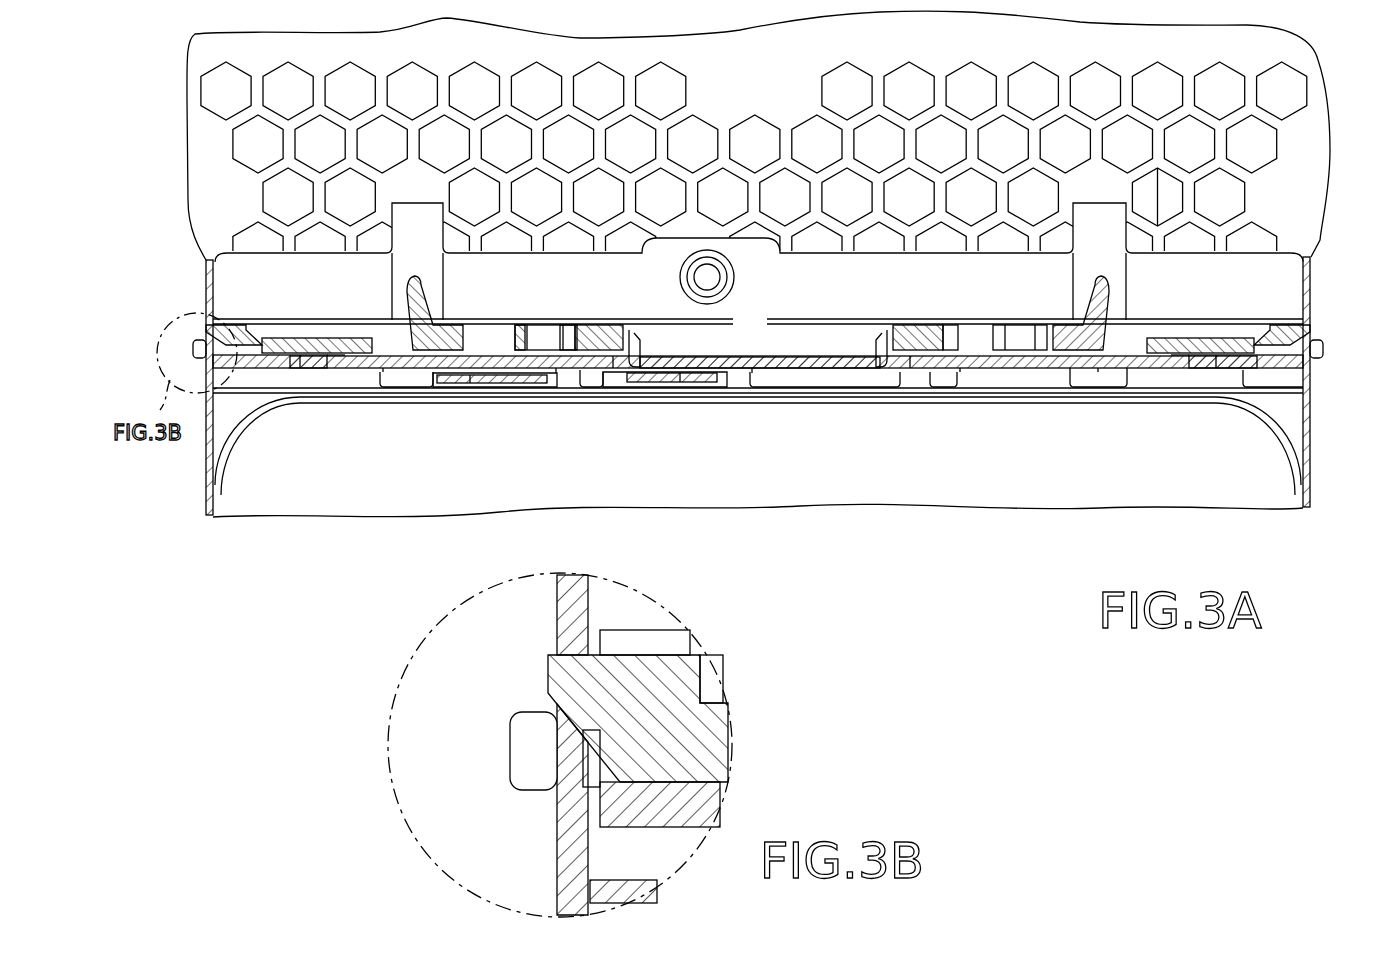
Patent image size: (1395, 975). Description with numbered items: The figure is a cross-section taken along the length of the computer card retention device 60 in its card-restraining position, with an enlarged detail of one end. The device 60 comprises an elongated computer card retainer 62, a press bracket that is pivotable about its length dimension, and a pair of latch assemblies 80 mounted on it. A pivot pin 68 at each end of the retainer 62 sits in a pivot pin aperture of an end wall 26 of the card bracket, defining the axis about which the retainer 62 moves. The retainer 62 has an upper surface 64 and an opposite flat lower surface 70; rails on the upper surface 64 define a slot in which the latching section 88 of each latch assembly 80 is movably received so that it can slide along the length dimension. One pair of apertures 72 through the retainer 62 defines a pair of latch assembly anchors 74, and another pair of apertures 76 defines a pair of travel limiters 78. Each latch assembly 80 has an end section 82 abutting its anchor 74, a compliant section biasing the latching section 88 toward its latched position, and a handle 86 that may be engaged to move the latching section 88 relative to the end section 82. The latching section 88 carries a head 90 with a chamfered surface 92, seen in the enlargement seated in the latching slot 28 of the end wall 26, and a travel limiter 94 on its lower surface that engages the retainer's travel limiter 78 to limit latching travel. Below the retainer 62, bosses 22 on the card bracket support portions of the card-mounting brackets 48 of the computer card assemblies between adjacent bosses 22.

In FIG. 3A, the boss 22 is at (383, 367).
In FIG. 3A, the end wall 26 is at (205, 282).
In FIG. 3B, the end wall 26 is at (555, 603).
In FIG. 3B, the latching slot 28 is at (567, 753).
In FIG. 3A, the card-mounting bracket 48 is at (470, 377).
In FIG. 3A, the computer card retention device 60 is at (735, 345).
In FIG. 3A, the computer card retainer 62 is at (487, 357).
In FIG. 3A, the upper surface 64 is at (745, 350).
In FIG. 3A, the pivot pin 68 is at (192, 350).
In FIG. 3B, the pivot pin 68 is at (513, 735).
In FIG. 3A, the lower surface 70 is at (813, 368).
In FIG. 3A, the aperture 72 is at (613, 363).
In FIG. 3A, the latch assembly anchor 74 is at (642, 347).
In FIG. 3A, the aperture 76 is at (300, 378).
In FIG. 3A, the travel limiter 78 is at (322, 380).
In FIG. 3A, the latch assembly 80 is at (352, 322).
In FIG. 3A, the end section 82 is at (630, 330).
In FIG. 3A, the handle 86 is at (427, 290).
In FIG. 3A, the latching section 88 is at (268, 337).
In FIG. 3A, the head 90 is at (207, 328).
In FIG. 3B, the head 90 is at (548, 675).
In FIG. 3B, the chamfered surface 92 is at (557, 733).
In FIG. 3A, the travel limiter 94 is at (345, 370).